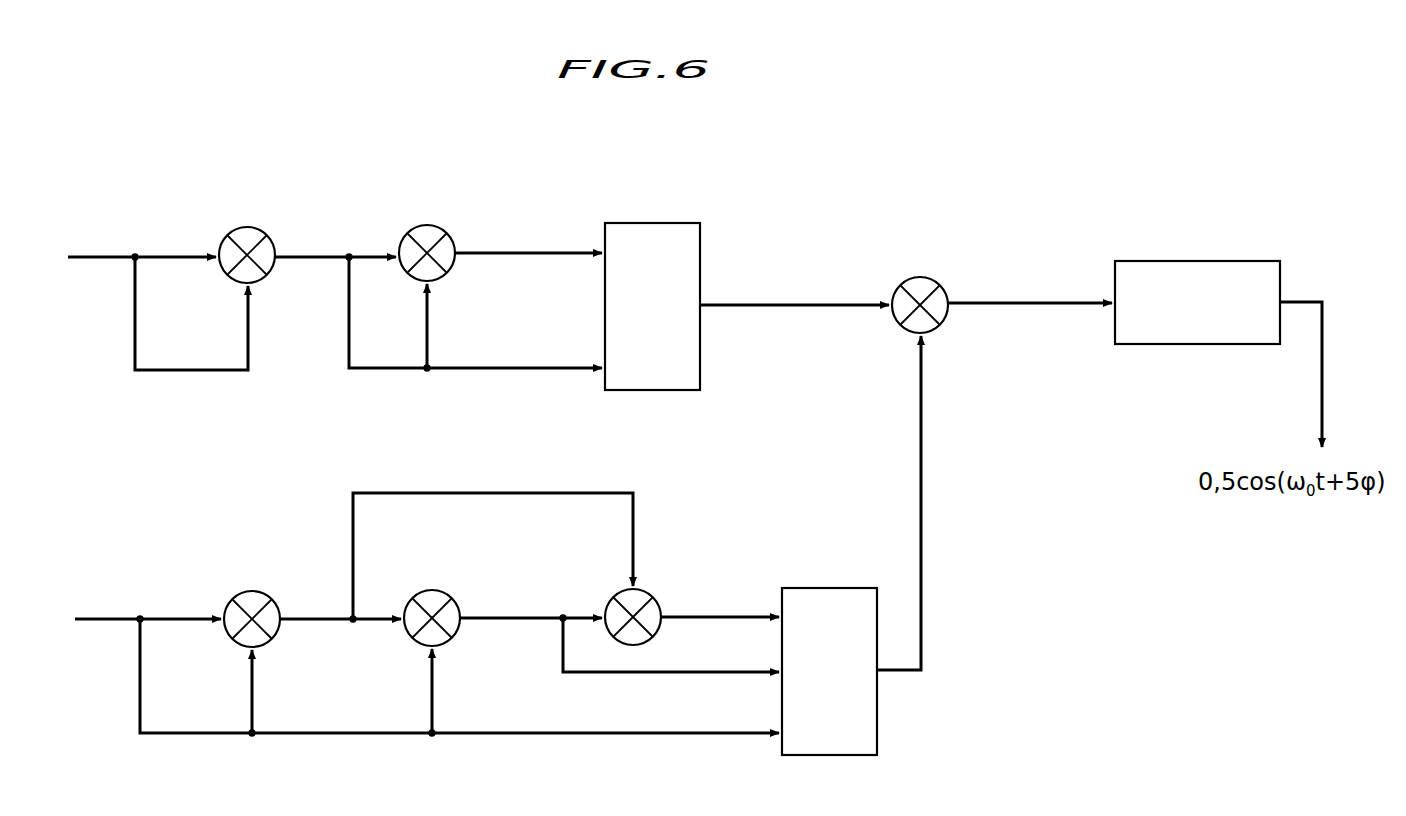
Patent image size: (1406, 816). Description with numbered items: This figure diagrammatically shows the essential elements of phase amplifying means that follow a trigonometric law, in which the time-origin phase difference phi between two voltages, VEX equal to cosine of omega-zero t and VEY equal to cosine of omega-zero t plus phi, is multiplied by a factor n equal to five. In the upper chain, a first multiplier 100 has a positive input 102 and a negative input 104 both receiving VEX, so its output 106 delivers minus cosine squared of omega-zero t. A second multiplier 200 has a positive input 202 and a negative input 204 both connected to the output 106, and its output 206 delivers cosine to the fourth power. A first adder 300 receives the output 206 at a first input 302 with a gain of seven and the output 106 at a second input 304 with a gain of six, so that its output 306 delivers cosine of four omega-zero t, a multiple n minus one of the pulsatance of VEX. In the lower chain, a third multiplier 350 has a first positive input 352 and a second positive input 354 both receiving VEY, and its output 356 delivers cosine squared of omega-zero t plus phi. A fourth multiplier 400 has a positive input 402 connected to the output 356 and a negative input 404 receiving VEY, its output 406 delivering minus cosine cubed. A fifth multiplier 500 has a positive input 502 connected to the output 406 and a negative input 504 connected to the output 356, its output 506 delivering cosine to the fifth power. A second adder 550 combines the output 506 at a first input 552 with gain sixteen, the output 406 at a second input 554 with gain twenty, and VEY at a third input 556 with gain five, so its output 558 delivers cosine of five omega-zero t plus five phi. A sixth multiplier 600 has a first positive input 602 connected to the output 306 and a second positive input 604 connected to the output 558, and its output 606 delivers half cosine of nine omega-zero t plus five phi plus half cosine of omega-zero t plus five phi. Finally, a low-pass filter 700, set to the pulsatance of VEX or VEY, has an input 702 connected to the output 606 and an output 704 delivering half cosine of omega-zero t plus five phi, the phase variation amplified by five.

The first multiplier 100 is at (245, 232).
The positive input of first multiplier 102 is at (246, 286).
The negative input of first multiplier 104 is at (218, 246).
The output of first multiplier 106 is at (278, 262).
The second multiplier 200 is at (428, 228).
The positive input of second multiplier 202 is at (426, 285).
The negative input of second multiplier 204 is at (404, 246).
The output of second multiplier 206 is at (455, 262).
The first adder 300 is at (653, 232).
The first input of first adder 302 is at (600, 260).
The second input of first adder 304 is at (600, 371).
The output of first adder 306 is at (703, 309).
The third multiplier 350 is at (250, 593).
The first positive input of third multiplier 352 is at (225, 609).
The second positive input of third multiplier 354 is at (250, 651).
The output of third multiplier 356 is at (280, 610).
The fourth multiplier 400 is at (432, 592).
The positive input of fourth multiplier 402 is at (405, 609).
The negative input of fourth multiplier 404 is at (423, 647).
The output of fourth multiplier 406 is at (460, 612).
The fifth multiplier 500 is at (642, 641).
The positive input of fifth multiplier 502 is at (607, 609).
The negative input of fifth multiplier 504 is at (642, 590).
The output of fifth multiplier 506 is at (661, 612).
The second adder 550 is at (831, 753).
The first input of second adder 552 is at (780, 612).
The second input of second adder 554 is at (780, 676).
The third input of second adder 556 is at (780, 735).
The output of second adder 558 is at (880, 675).
The sixth multiplier 600 is at (921, 280).
The first positive input of sixth multiplier 602 is at (893, 297).
The second positive input of sixth multiplier 604 is at (913, 337).
The output of sixth multiplier 606 is at (950, 300).
The low-pass filter 700 is at (1193, 342).
The input of low-pass filter 702 is at (1112, 306).
The output of low-pass filter 704 is at (1283, 296).